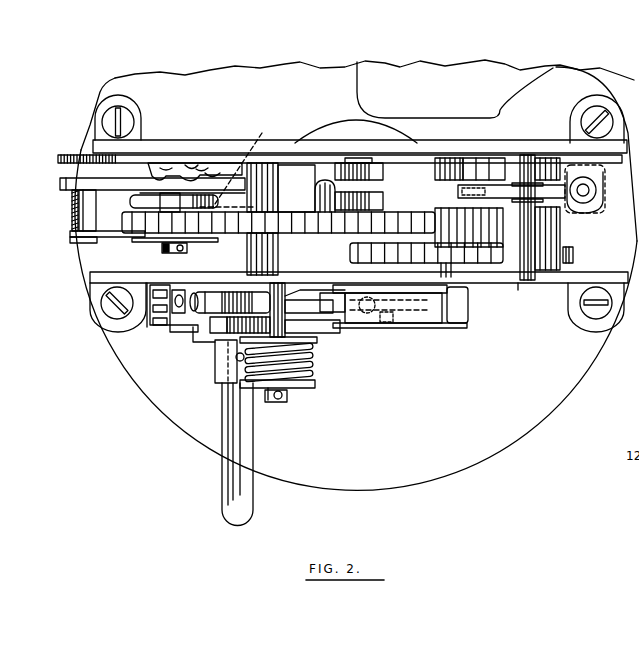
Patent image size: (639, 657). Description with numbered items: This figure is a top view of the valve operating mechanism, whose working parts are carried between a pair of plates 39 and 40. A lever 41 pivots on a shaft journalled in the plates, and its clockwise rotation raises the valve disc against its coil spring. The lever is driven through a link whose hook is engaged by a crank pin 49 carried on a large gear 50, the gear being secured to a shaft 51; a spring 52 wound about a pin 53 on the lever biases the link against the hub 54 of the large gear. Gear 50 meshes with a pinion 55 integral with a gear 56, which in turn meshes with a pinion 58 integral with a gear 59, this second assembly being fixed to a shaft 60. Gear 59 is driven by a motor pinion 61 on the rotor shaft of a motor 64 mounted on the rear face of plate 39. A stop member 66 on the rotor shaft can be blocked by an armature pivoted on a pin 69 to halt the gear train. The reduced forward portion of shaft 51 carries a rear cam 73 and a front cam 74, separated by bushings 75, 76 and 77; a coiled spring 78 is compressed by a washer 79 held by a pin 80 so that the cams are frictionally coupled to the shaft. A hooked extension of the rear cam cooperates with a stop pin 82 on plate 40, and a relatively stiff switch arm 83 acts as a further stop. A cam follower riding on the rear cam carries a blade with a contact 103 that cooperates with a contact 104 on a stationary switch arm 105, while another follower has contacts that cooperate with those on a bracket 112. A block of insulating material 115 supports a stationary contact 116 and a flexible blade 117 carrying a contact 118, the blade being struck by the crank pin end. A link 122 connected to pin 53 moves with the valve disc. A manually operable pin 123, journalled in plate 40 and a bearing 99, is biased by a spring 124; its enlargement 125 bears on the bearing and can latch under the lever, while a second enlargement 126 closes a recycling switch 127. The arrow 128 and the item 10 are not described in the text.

The plate 39 is at (160, 140).
The plate 40 is at (596, 275).
The lever 41 is at (58, 180).
The crank pin 49 is at (336, 192).
The large gear 50 is at (287, 231).
The shaft 51 is at (268, 402).
The spring 52 is at (70, 232).
The pin 53 is at (100, 216).
The hub 54 is at (303, 200).
The pinion 55 is at (440, 213).
The gear 56 is at (576, 256).
The pinion 58 is at (566, 240).
The gear 59 is at (498, 160).
The shaft 60 is at (544, 275).
The motor pinion 61 is at (431, 167).
The motor 64 is at (548, 96).
The stop member 66 is at (440, 192).
The pin 69 is at (518, 283).
The rear cam 73 is at (318, 297).
The front cam 74 is at (340, 325).
The bushing 75 is at (292, 292).
The bushing 76 is at (319, 342).
The bushing 77 is at (318, 353).
The coiled spring 78 is at (318, 366).
The washer 79 is at (318, 380).
The pin 80 is at (283, 398).
The stop pin 82 is at (278, 298).
The switch arm 83 is at (418, 318).
The bearing 99 is at (215, 254).
The contact 103 is at (197, 310).
The contact 104 is at (181, 313).
The switch arm 105 is at (173, 312).
The bracket 112 is at (460, 325).
The block of insulating material 115 is at (70, 156).
The stationary contact 116 is at (192, 166).
The flexible blade 117 is at (216, 178).
The contact 118 is at (183, 172).
The link 122 is at (70, 215).
The manually operable pin 123 is at (226, 406).
The spring 124 is at (222, 290).
The enlargement 125 is at (258, 148).
The enlargement 126 is at (198, 333).
The recycling switch 127 is at (140, 328).
The direction arrow 128 is at (636, 488).
The switch 10 is at (174, 225).